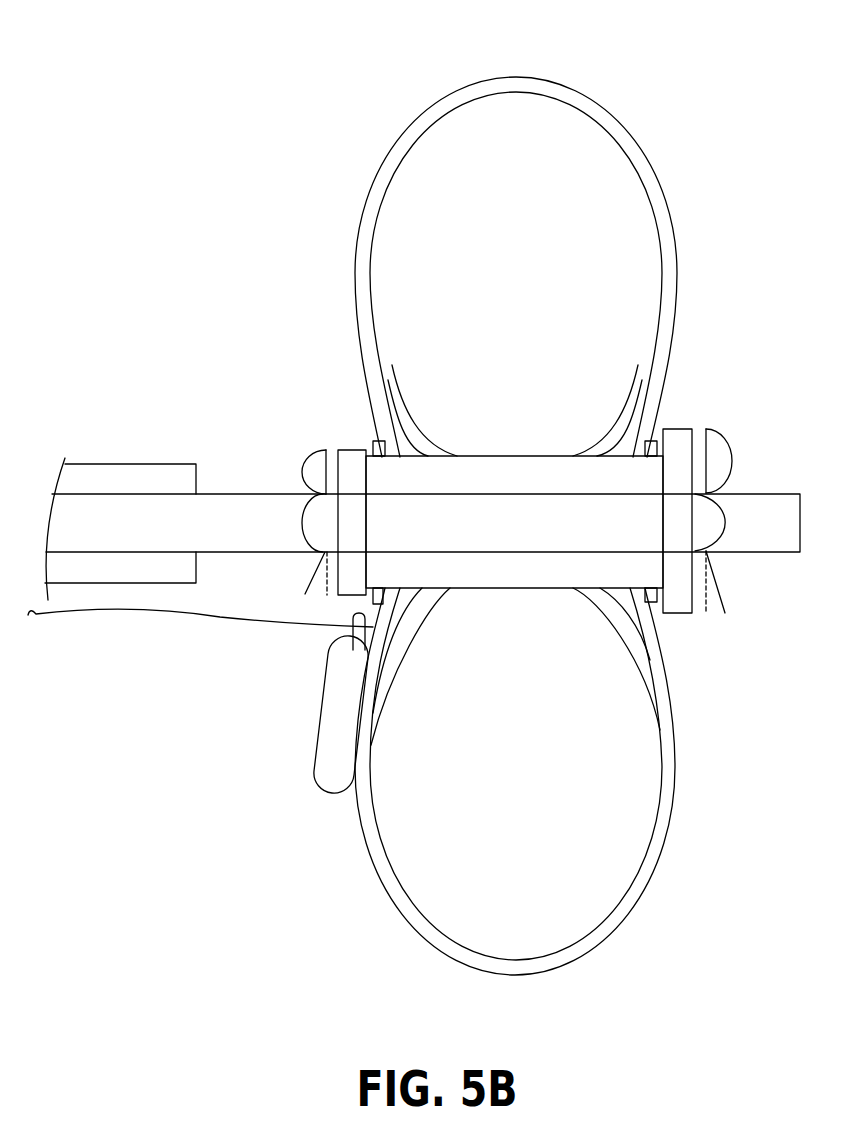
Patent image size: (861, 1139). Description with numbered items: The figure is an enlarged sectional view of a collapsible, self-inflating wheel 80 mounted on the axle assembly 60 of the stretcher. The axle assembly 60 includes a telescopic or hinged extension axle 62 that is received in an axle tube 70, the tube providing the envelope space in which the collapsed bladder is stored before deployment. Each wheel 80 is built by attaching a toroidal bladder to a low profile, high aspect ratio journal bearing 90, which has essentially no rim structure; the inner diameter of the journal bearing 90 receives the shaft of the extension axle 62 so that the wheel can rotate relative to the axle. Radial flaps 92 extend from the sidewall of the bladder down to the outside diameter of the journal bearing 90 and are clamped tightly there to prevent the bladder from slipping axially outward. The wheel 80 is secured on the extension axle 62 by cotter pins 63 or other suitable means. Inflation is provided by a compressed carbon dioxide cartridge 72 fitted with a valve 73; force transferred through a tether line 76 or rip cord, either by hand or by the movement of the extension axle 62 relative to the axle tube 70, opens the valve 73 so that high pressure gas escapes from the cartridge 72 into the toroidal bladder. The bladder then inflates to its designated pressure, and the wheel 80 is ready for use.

The axle assembly 60 is at (272, 248).
The extension axle 62 is at (238, 502).
The cotter pin 63 is at (315, 463).
The axle tube 70 is at (158, 508).
The compressed carbon dioxide cartridge 72 is at (325, 783).
The valve 73 is at (353, 637).
The tether line 76 is at (145, 607).
The self-inflating wheel 80 is at (468, 127).
The journal bearing 90 is at (532, 472).
The radial flaps 92 is at (372, 393).